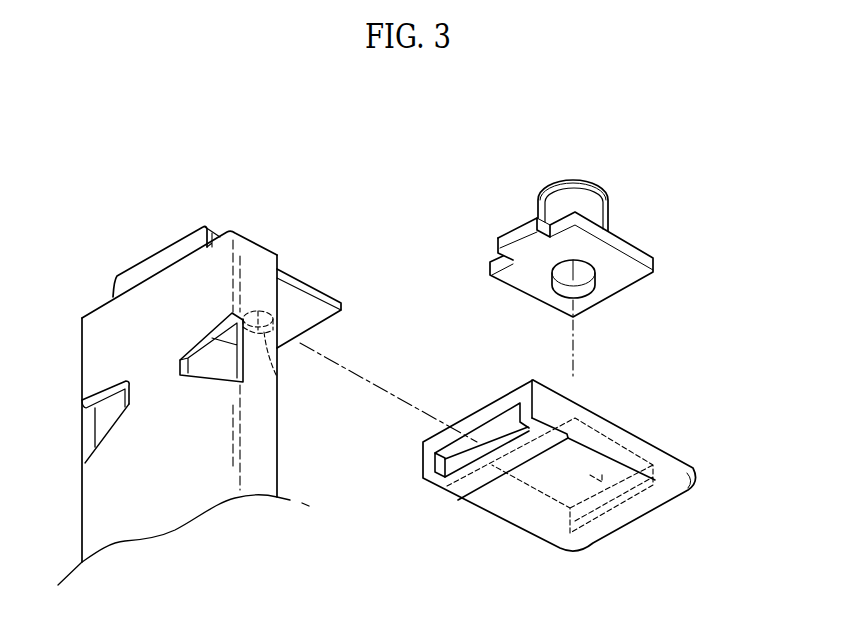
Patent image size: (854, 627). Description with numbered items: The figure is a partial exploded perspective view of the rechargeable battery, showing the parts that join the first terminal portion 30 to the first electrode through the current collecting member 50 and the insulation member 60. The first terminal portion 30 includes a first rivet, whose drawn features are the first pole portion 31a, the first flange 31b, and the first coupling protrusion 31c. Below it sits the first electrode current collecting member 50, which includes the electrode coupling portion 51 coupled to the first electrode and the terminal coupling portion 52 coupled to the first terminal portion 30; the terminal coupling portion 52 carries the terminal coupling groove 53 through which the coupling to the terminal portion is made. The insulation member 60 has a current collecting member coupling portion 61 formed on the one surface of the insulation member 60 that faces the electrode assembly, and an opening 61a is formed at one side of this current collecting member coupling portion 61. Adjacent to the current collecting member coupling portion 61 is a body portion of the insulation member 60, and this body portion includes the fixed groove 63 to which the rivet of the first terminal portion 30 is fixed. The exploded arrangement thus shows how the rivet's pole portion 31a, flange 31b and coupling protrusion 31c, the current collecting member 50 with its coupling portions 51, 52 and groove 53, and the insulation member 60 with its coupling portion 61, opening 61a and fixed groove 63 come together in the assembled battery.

The first terminal portion 30 is at (627, 255).
The first pole portion 31a is at (595, 216).
The first flange 31b is at (630, 278).
The first coupling protrusion 31c is at (580, 288).
The first electrode current collecting member 50 is at (86, 298).
The first electrode coupling portion 51 is at (260, 448).
The first terminal coupling portion 52 is at (300, 274).
The first terminal coupling groove 53 is at (275, 369).
The insulation member 60 is at (540, 490).
The current collecting member coupling portion 61 is at (457, 482).
The opening 61a is at (457, 450).
The fixed groove 63 is at (602, 477).